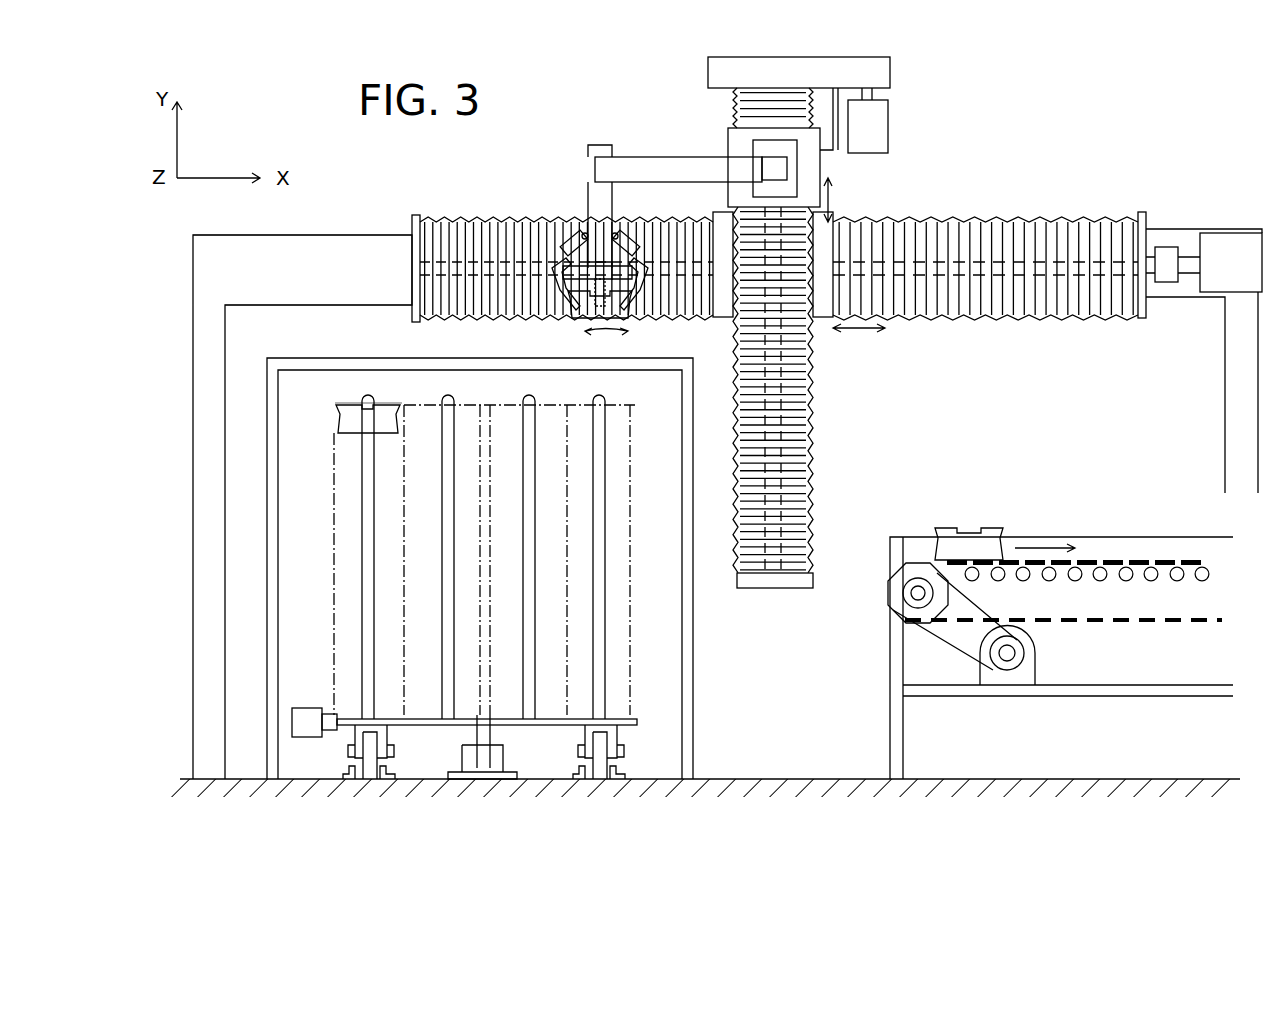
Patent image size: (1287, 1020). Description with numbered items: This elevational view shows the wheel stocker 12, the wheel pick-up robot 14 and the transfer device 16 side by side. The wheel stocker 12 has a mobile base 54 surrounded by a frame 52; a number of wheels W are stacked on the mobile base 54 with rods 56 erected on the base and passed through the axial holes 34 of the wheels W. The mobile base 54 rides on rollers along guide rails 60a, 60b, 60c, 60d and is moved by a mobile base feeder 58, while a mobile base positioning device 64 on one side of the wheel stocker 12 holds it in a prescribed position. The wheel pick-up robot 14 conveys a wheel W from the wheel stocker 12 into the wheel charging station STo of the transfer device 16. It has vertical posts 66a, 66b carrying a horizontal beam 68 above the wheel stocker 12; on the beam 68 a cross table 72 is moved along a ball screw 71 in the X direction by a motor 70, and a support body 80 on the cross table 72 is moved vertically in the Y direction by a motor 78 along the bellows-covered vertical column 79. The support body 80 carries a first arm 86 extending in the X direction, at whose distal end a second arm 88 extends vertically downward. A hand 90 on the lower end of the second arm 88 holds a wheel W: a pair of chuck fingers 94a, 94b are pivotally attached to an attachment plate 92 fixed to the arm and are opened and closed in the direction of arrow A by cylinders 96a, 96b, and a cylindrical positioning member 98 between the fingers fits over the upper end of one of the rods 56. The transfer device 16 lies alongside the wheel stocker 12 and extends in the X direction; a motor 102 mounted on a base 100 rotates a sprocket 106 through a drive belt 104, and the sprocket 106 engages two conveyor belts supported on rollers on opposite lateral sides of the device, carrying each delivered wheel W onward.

The wheel stocker 12 is at (248, 395).
The wheel pick-up robot 14 is at (931, 109).
The transfer device 16 is at (874, 700).
The axial hole 34 is at (352, 405).
The frame 52 is at (270, 478).
The mobile base 54 is at (620, 718).
The rods 56 is at (367, 543).
The mobile base feeder 58 is at (486, 765).
The guide rail 60a is at (350, 783).
The guide rail 60b is at (392, 773).
The stopper 60c is at (578, 783).
The stopper 60d is at (617, 774).
The mobile base positioning device 64 is at (305, 714).
The vertical post 66a is at (207, 548).
The vertical post 66b is at (1232, 462).
The horizontal beam 68 is at (354, 262).
The motor 70 is at (1220, 250).
The ball screw 71 is at (1050, 250).
The cross table 72 is at (832, 216).
The motor 78 is at (875, 135).
The vertical column with bellows 79 is at (818, 362).
The support body 80 is at (738, 145).
The first arm 86 is at (648, 170).
The second arm 88 is at (590, 200).
The hand 90 is at (553, 330).
The attachment plate 92 is at (602, 266).
The chuck finger 94a is at (558, 292).
The chuck finger 94b is at (642, 292).
The cylinder 96a is at (572, 236).
The cylinder 96b is at (622, 248).
The cylindrical positioning member 98 is at (588, 318).
The base 100 is at (898, 722).
The motor 102 is at (1030, 668).
The drive belt 104 is at (960, 650).
The sprocket 106 is at (895, 595).
The wheel W is at (632, 312).
The arrow A is at (629, 344).
The wheel charging station STo is at (1045, 515).